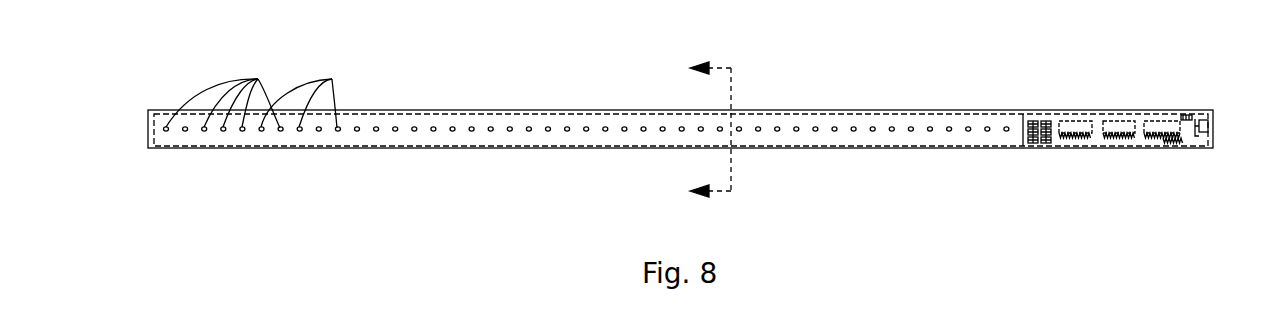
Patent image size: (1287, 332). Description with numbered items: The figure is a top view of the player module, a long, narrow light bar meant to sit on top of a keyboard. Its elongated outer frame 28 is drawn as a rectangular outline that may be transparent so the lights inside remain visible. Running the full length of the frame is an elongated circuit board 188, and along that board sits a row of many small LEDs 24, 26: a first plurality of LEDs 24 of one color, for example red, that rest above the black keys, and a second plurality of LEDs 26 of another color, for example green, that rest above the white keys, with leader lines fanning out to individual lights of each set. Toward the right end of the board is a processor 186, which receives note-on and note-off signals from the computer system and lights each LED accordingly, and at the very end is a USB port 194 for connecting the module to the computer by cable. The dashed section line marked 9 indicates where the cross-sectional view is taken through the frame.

The first plurality of LEDs 24 is at (332, 79).
The second plurality of LEDs 26 is at (258, 79).
The elongated outer frame 28 is at (388, 110).
The elongated circuit board 188 is at (540, 120).
The processor 186 is at (1098, 120).
The USB port 194 is at (1207, 118).
The section line 9- 9 is at (702, 129).